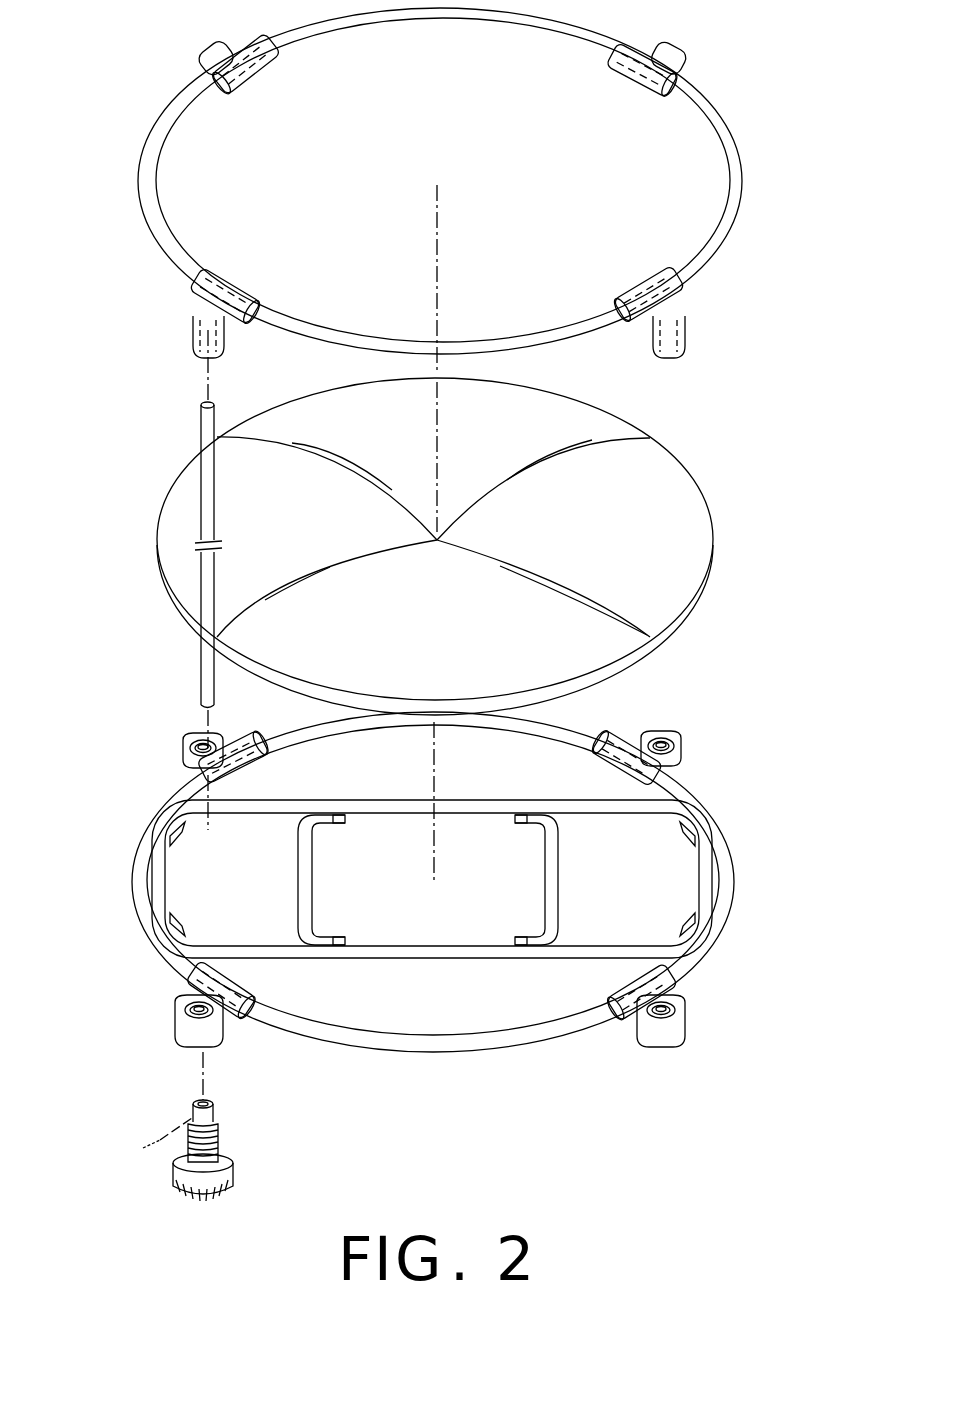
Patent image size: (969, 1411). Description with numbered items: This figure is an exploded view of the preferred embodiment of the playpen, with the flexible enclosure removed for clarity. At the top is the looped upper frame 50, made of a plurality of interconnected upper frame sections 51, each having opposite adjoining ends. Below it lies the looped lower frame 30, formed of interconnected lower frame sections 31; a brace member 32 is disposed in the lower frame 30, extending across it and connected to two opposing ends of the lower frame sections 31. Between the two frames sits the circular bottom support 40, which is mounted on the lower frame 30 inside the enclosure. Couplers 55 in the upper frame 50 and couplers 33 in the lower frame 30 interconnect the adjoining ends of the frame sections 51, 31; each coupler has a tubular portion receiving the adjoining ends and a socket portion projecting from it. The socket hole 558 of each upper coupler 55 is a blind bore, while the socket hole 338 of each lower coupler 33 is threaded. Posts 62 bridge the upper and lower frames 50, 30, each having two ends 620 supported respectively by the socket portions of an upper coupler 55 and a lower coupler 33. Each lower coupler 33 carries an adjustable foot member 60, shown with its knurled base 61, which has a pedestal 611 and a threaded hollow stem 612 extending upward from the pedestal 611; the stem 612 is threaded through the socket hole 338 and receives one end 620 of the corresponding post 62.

The looped lower frame 30 is at (473, 906).
The lower frame sections 31 is at (733, 885).
The brace member 32 is at (470, 952).
The couplers 33 is at (475, 869).
The socket hole 338 is at (668, 740).
The circular bottom support 40 is at (712, 497).
The looped upper frame 50 is at (480, 183).
The upper frame sections 51 is at (738, 180).
The couplers 55 is at (491, 186).
The socket hole 558 is at (690, 348).
The adjustable foot member 60 is at (219, 1142).
The knurled knob 61 is at (219, 1176).
The pedestal 611 is at (232, 1180).
The threaded hollow stem 612 is at (218, 1132).
The posts 62 is at (151, 533).
The ends 620 is at (203, 403).